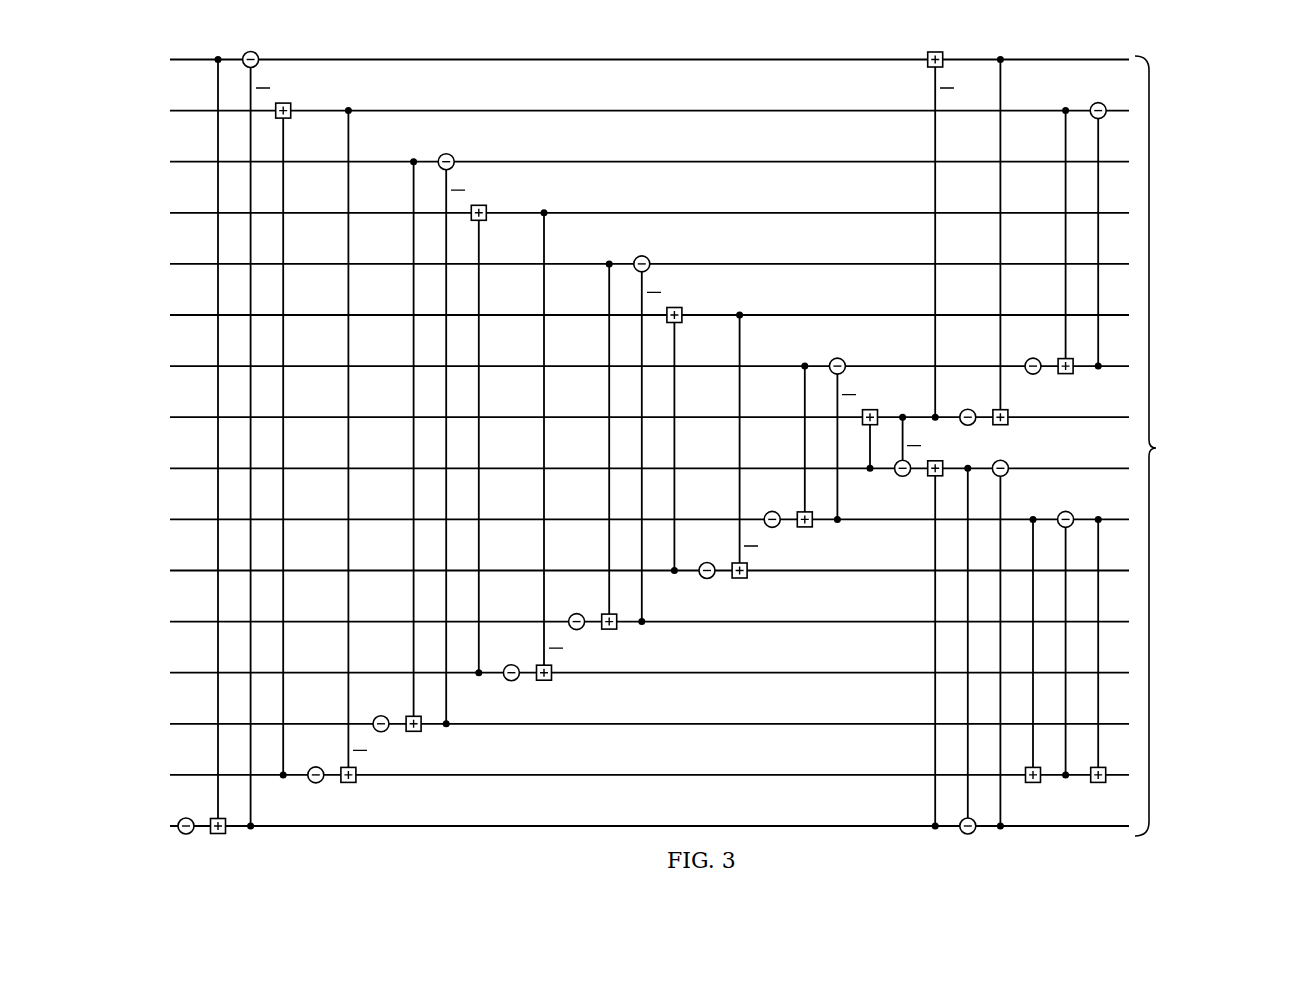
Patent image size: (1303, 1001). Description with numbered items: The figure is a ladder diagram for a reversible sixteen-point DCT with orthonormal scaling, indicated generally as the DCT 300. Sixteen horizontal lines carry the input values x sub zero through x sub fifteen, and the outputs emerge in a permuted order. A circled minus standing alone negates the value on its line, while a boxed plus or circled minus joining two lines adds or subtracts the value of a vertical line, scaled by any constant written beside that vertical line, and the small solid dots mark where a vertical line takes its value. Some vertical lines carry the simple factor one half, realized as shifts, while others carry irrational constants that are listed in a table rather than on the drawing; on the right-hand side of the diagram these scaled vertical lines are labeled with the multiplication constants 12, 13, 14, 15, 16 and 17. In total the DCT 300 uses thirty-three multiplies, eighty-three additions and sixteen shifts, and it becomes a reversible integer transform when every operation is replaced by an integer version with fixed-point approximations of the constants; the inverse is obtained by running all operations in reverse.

The reversible 16-point DCT ladder diagram 300 is at (720, 21).
The multiplication constant 12 is at (952, 441).
The multiplication constant 13 is at (985, 621).
The multiplication constant 14 is at (1017, 443).
The multiplication constant 15 is at (1049, 570).
The multiplication constant 16 is at (1083, 442).
The multiplication constant 17 is at (1114, 443).